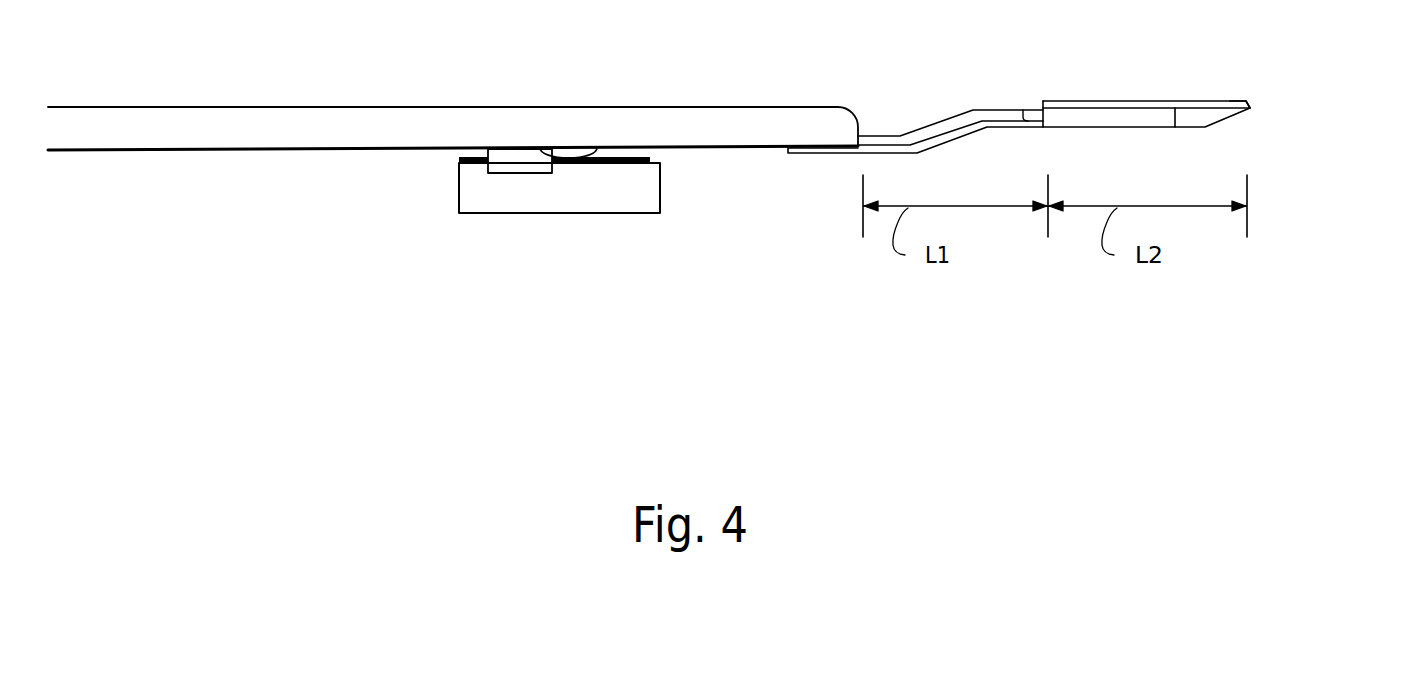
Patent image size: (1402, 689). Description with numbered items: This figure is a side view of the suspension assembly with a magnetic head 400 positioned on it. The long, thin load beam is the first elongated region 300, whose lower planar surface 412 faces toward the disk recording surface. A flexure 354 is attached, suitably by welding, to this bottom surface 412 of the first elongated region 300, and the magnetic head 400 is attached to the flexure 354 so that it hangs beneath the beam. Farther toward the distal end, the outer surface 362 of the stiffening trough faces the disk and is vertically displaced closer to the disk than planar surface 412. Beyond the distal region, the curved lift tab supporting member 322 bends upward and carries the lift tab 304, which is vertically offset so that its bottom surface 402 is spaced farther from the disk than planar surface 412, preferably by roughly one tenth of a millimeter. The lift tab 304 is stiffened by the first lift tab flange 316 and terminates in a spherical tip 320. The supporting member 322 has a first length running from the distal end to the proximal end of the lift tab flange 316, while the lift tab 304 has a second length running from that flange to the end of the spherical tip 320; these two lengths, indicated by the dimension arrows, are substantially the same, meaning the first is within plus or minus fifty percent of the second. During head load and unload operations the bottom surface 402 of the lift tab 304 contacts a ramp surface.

The first elongated region 300 is at (400, 107).
The planar surface 412 is at (170, 161).
The flexure 354 is at (437, 160).
The magnetic head 400 is at (562, 227).
The outer surface 362 is at (810, 160).
The curved lift tab supporting member 322 is at (970, 109).
The lift tab 304 is at (1141, 86).
The bottom surface 402 is at (1140, 128).
The first lift tab flange 316 is at (1176, 129).
The spherical tip 320 is at (1254, 92).